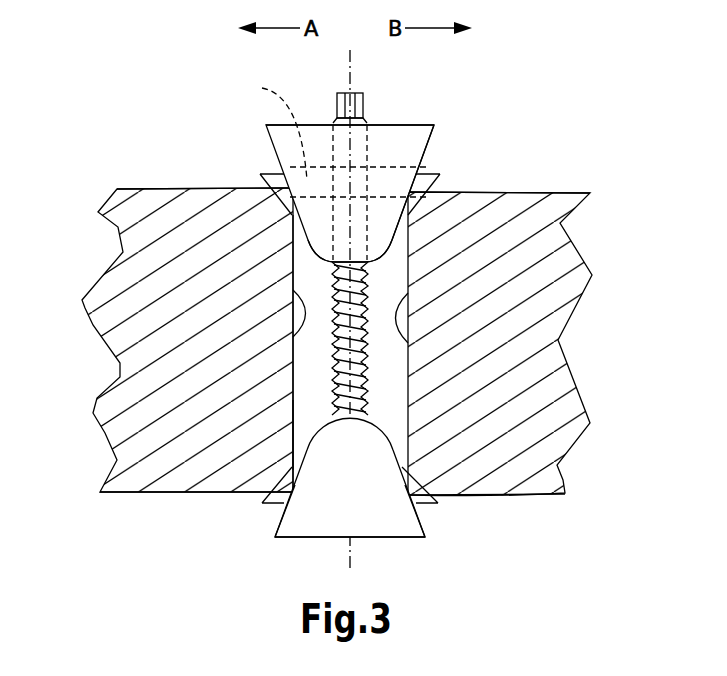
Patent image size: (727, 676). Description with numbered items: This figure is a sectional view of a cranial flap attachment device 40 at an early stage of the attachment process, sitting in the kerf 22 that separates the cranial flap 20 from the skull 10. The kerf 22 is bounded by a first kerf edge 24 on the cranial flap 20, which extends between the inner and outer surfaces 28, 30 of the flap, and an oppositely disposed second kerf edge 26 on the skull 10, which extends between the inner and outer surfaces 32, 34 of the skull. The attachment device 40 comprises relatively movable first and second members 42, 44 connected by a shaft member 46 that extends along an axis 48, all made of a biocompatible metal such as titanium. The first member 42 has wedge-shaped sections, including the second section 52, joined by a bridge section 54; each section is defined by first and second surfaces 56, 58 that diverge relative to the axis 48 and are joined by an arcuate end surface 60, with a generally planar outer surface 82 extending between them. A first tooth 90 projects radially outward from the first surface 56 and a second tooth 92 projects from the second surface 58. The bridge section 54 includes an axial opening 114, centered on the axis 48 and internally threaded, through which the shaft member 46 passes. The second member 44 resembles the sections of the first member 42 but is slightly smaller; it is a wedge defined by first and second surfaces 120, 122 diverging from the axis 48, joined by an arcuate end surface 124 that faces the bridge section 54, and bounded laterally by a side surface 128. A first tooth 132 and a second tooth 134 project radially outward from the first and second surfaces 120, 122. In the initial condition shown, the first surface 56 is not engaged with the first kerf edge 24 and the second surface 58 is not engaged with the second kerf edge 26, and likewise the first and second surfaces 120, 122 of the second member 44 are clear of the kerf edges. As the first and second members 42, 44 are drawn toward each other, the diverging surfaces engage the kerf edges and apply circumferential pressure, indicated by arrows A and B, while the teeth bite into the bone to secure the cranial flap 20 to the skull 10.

The skull 10 is at (540, 372).
The cranial flap 20 is at (112, 320).
The kerf 22 is at (300, 395).
The first kerf edge 24 is at (295, 290).
The second kerf edge 26 is at (400, 310).
The inner surface of cranial flap 28 is at (130, 187).
The outer surface of cranial flap 30 is at (152, 495).
The inner surface of skull 32 is at (540, 190).
The outer surface of skull 34 is at (497, 497).
The attachment device 40 is at (428, 118).
The first member 42 is at (311, 110).
The second member 44 is at (402, 553).
The shaft member 46 is at (370, 264).
The axis 48 is at (352, 57).
The second section 52 is at (448, 129).
The bridge section 54 is at (270, 125).
The first surface 56 is at (262, 135).
The second surface 58 is at (430, 153).
The arcuate end surface 60 is at (320, 262).
The outer surface 82 is at (390, 133).
The first tooth 90 is at (345, 186).
The second tooth 92 is at (425, 172).
The axial opening 114 is at (320, 195).
The first surface 120 is at (275, 534).
The second surface 122 is at (427, 525).
The arcuate end surface 124 is at (300, 415).
The second side surface 128 is at (303, 538).
The first tooth 132 is at (262, 510).
The second tooth 134 is at (420, 505).